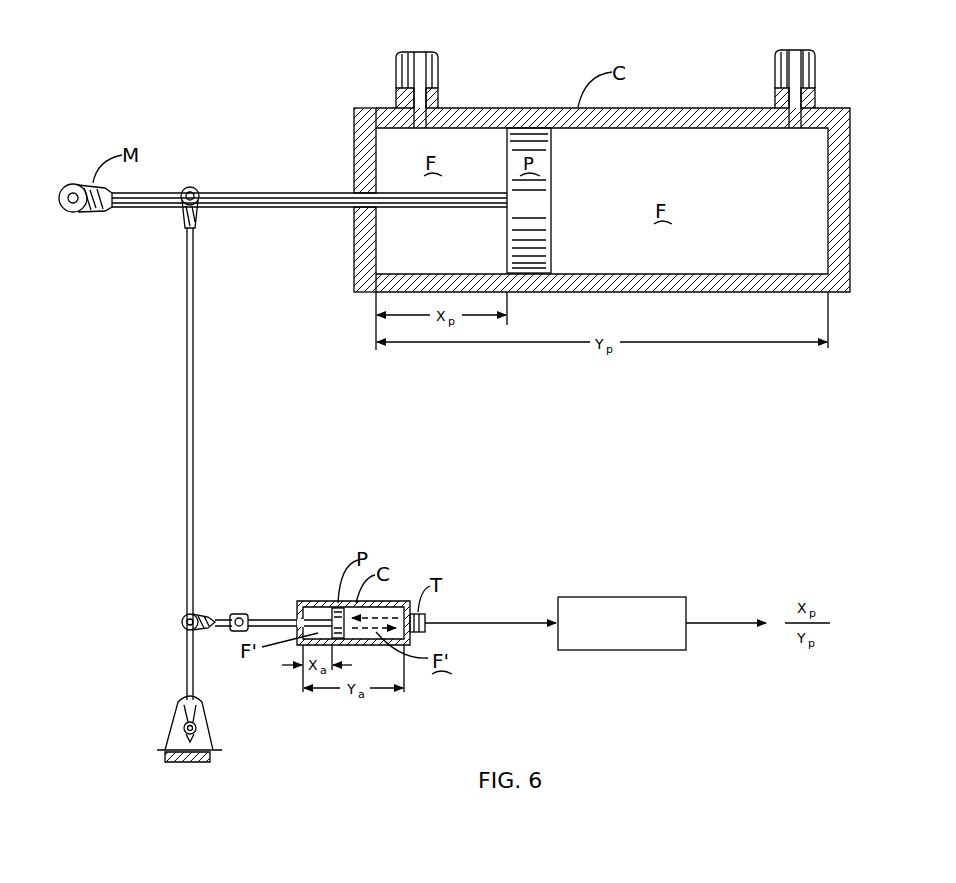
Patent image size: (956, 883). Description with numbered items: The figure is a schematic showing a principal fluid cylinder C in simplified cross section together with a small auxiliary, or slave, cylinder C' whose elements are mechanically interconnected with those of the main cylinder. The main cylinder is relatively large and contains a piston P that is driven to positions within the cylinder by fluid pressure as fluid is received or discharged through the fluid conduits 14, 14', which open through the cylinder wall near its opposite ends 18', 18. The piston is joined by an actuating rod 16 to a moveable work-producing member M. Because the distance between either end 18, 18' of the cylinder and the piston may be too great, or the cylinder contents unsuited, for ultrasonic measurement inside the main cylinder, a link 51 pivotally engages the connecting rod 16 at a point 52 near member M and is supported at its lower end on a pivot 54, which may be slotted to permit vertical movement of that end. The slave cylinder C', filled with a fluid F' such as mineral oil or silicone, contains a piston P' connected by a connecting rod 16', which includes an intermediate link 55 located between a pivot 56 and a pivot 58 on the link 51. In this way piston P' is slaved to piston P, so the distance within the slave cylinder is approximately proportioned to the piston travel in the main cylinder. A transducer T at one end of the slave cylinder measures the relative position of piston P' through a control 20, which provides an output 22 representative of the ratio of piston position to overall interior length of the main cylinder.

The fluid conduit 14 is at (459, 72).
The fluid conduit 14' is at (837, 76).
The actuating rod 16 is at (283, 162).
The connecting rod 16' is at (290, 584).
The cylinder end wall 18 is at (643, 200).
The cylinder end wall 18' is at (322, 180).
The control 20 is at (633, 597).
The output 22 is at (703, 623).
The link 51 is at (196, 402).
The pivot point 52 is at (182, 207).
The pivot 54 is at (173, 725).
The intermediate link 55 is at (222, 620).
The pivot 56 is at (238, 613).
The pivot 58 is at (182, 625).